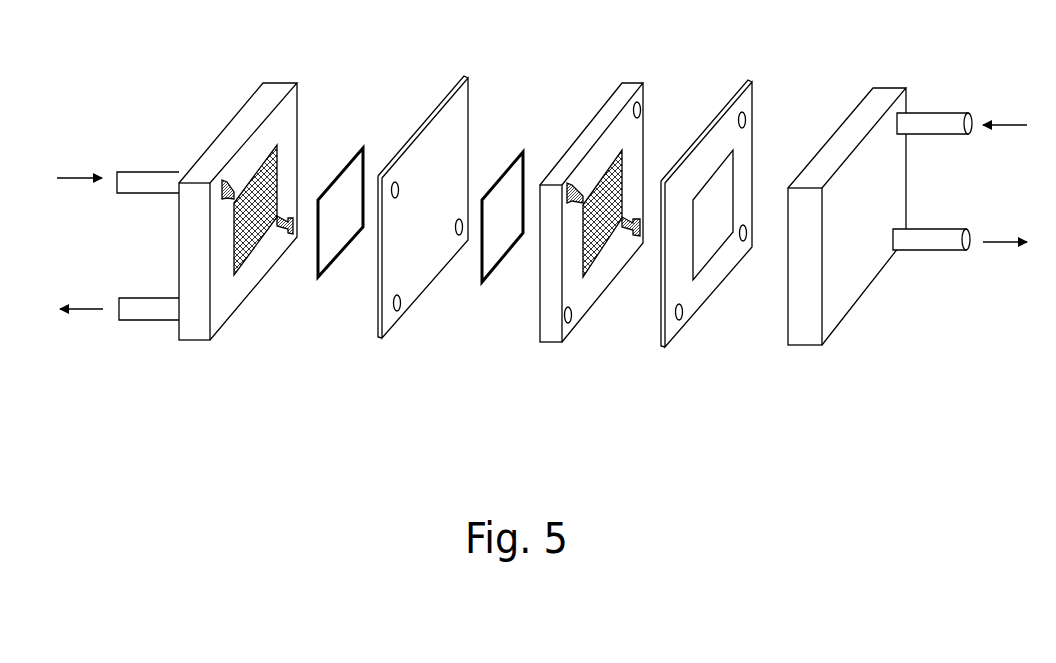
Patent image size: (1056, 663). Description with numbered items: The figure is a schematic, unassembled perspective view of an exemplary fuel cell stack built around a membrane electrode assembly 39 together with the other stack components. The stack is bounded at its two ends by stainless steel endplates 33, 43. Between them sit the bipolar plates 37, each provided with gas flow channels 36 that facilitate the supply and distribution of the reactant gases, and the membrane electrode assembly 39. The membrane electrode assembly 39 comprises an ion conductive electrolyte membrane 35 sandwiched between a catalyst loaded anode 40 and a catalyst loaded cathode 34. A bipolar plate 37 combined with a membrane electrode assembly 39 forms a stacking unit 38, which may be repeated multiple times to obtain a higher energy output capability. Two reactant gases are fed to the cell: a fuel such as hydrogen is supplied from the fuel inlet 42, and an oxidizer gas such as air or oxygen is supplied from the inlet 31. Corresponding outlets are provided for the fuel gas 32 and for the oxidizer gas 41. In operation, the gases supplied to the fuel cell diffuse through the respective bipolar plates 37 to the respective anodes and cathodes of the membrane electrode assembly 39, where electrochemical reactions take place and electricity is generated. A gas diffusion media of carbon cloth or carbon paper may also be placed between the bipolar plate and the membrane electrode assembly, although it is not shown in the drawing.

The oxidizer gas inlet 31 is at (140, 171).
The fuel gas outlet 32 is at (152, 321).
The stainless steel endplate 33 is at (228, 324).
The catalyst loaded cathode 34 is at (363, 148).
The ion conductive electrolyte membrane 35 is at (452, 132).
The gas flow channels 36 is at (620, 183).
The bipolar plate 37 is at (612, 237).
The stacking unit 38 is at (660, 310).
The membrane electrode assembly 39 is at (390, 332).
The catalyst loaded anode 40 is at (492, 274).
The oxidizer gas outlet 41 is at (947, 251).
The fuel inlet 42 is at (962, 112).
The stainless steel endplate 43 is at (893, 87).